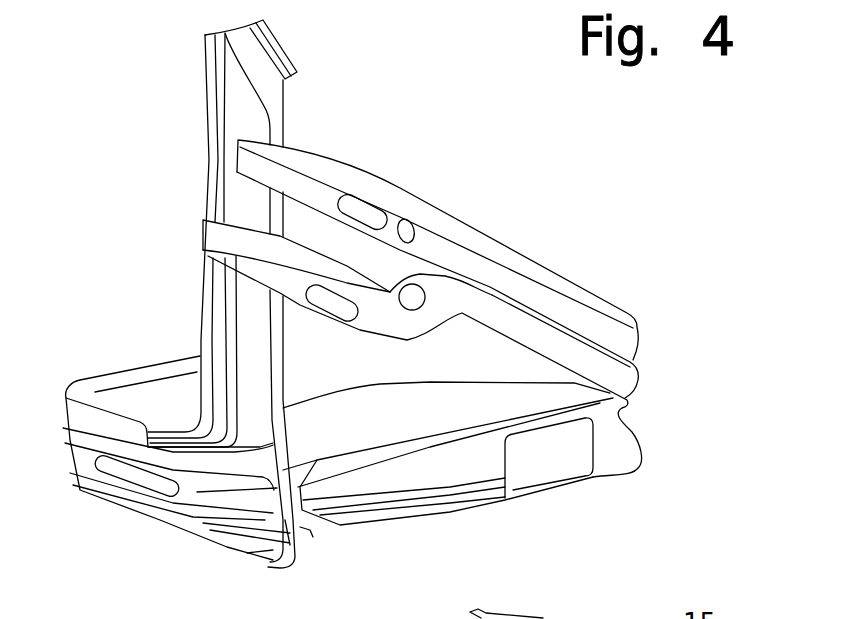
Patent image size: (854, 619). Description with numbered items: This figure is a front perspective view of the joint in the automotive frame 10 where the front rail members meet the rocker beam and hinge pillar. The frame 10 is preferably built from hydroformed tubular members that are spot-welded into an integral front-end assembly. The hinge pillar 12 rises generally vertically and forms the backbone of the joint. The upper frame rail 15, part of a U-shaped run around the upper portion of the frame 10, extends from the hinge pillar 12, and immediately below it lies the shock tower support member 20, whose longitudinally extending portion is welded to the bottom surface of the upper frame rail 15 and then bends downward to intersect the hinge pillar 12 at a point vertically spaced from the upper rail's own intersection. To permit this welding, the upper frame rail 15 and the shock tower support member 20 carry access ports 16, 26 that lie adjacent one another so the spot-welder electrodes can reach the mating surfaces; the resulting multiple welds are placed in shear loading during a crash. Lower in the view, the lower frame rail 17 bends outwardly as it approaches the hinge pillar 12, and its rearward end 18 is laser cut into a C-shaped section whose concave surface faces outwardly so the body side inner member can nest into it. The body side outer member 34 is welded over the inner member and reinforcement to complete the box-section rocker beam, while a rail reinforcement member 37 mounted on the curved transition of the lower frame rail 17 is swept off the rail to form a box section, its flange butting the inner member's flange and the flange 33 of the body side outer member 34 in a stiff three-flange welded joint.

The automotive frame 10 is at (603, 200).
The hinge pillar 12 is at (268, 95).
The upper frame rail 15 is at (462, 232).
The access port 16 is at (396, 210).
The lower frame rail 17 is at (368, 442).
The rearward end of the lower frame rail 18 is at (103, 393).
The shock tower support member 20 is at (548, 338).
The access port 26 is at (370, 315).
The flange 33 is at (280, 493).
The body side outer member 34 is at (133, 457).
The rail reinforcement member 37 is at (473, 468).